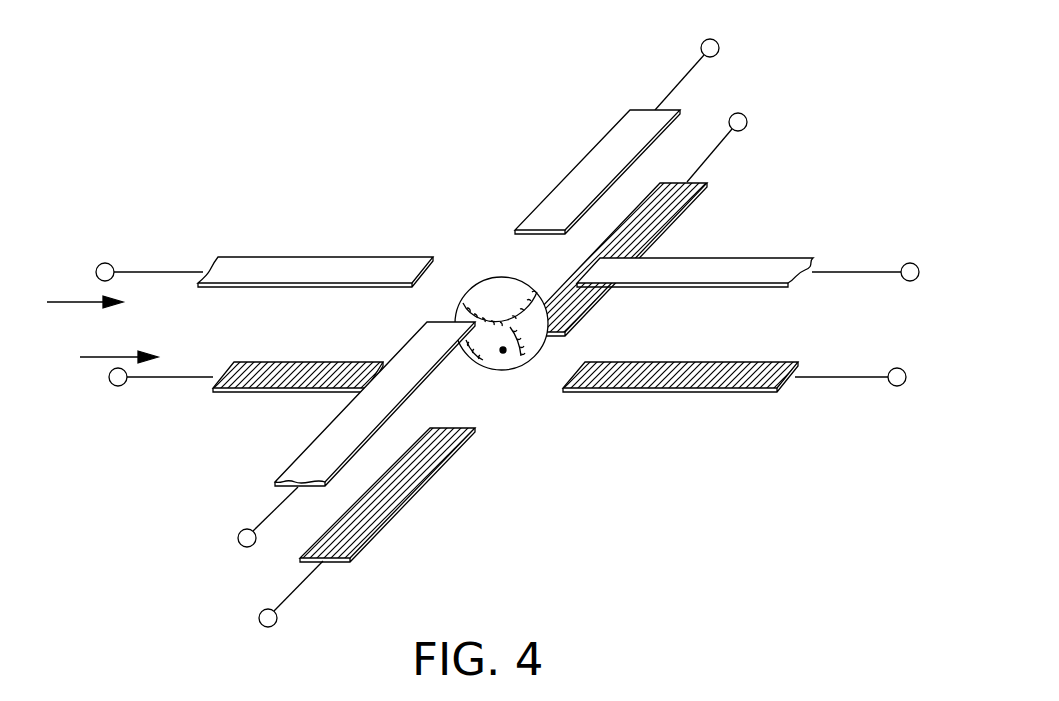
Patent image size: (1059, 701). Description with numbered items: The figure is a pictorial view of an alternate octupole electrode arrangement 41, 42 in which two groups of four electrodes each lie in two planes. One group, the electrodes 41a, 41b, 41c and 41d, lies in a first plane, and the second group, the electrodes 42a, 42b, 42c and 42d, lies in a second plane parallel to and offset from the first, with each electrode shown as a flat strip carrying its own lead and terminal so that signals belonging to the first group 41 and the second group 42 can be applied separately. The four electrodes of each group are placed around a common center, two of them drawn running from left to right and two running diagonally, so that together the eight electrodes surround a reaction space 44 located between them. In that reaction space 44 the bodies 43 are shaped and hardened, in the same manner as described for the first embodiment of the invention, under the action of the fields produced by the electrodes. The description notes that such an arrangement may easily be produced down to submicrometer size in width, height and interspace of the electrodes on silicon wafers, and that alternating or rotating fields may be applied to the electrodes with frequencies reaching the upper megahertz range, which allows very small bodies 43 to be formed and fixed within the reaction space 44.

The octupole arrangement 41 is at (84, 291).
The octupole arrangement 42 is at (119, 344).
The electrode 41a is at (315, 265).
The electrode 41b is at (592, 170).
The electrode 41c is at (767, 262).
The electrode 41d is at (322, 453).
The electrode 42a is at (288, 362).
The electrode 42b is at (693, 207).
The electrode 42c is at (715, 378).
The electrode 42d is at (370, 518).
The bodies 43 is at (503, 350).
The reaction space 44 is at (488, 277).